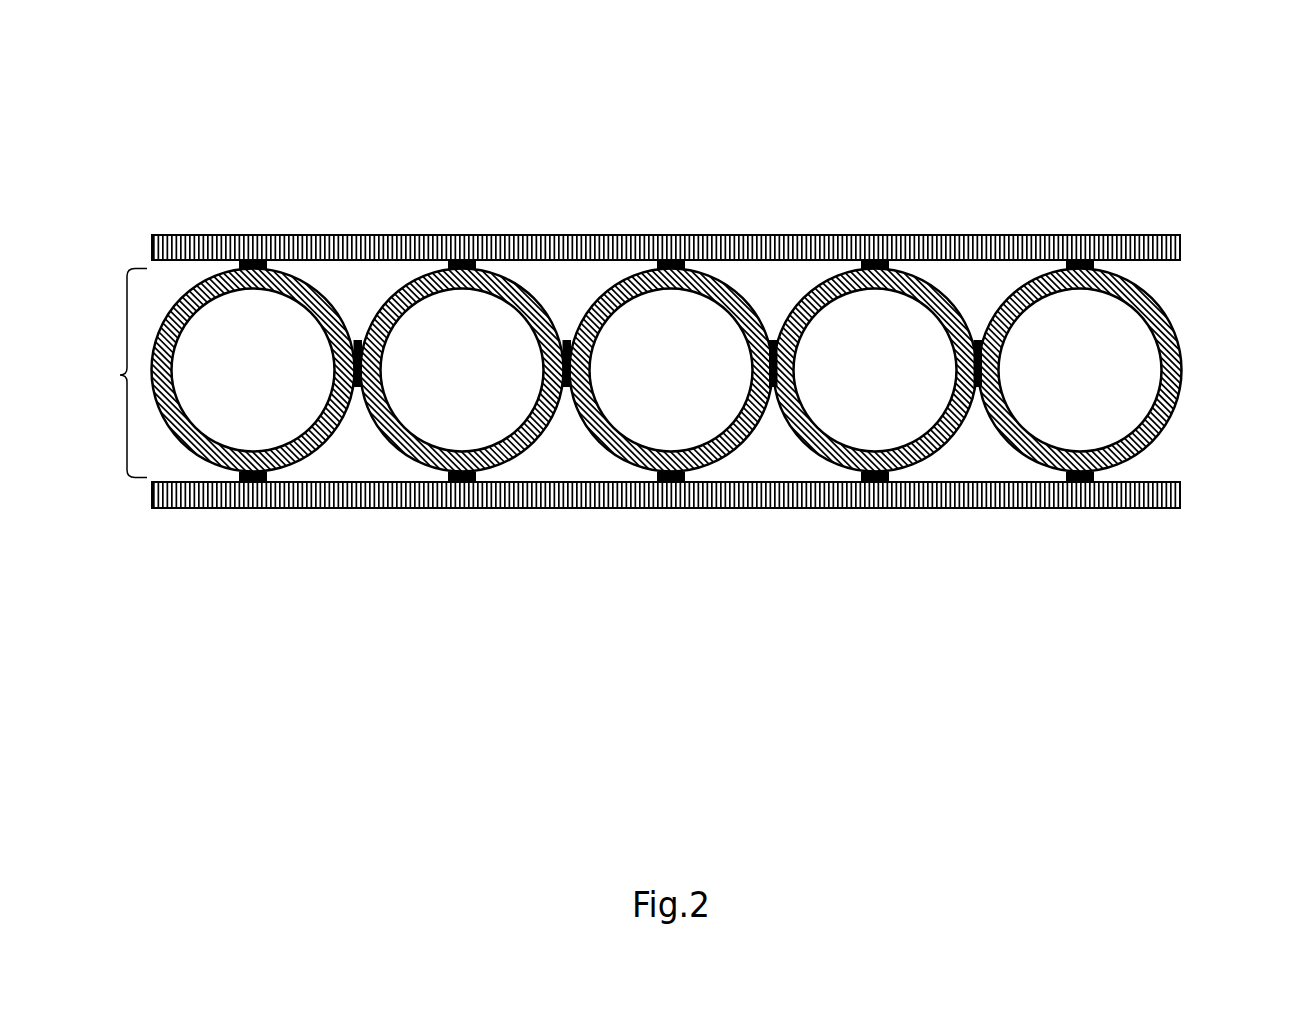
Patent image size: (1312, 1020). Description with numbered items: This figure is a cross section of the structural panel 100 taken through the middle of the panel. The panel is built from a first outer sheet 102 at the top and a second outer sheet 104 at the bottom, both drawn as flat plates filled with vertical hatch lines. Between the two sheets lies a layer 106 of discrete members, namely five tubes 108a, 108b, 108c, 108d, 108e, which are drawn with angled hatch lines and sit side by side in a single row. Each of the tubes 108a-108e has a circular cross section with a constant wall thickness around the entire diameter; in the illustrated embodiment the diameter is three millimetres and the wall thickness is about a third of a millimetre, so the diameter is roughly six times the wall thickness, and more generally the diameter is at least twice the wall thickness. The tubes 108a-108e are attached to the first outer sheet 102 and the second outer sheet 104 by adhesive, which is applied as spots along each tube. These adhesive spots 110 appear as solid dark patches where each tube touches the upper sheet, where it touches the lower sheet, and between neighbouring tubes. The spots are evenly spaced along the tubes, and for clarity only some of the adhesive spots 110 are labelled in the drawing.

The structural panel 100 is at (1020, 68).
The first outer sheet 102 is at (387, 235).
The second outer sheet 104 is at (1065, 508).
The layer of annular elements 106 is at (120, 375).
The tube 108a is at (195, 290).
The tube 108b is at (390, 440).
The tube 108c is at (585, 422).
The tube 108d is at (818, 287).
The tube 108e is at (1148, 298).
The adhesive spots 110 is at (858, 274).